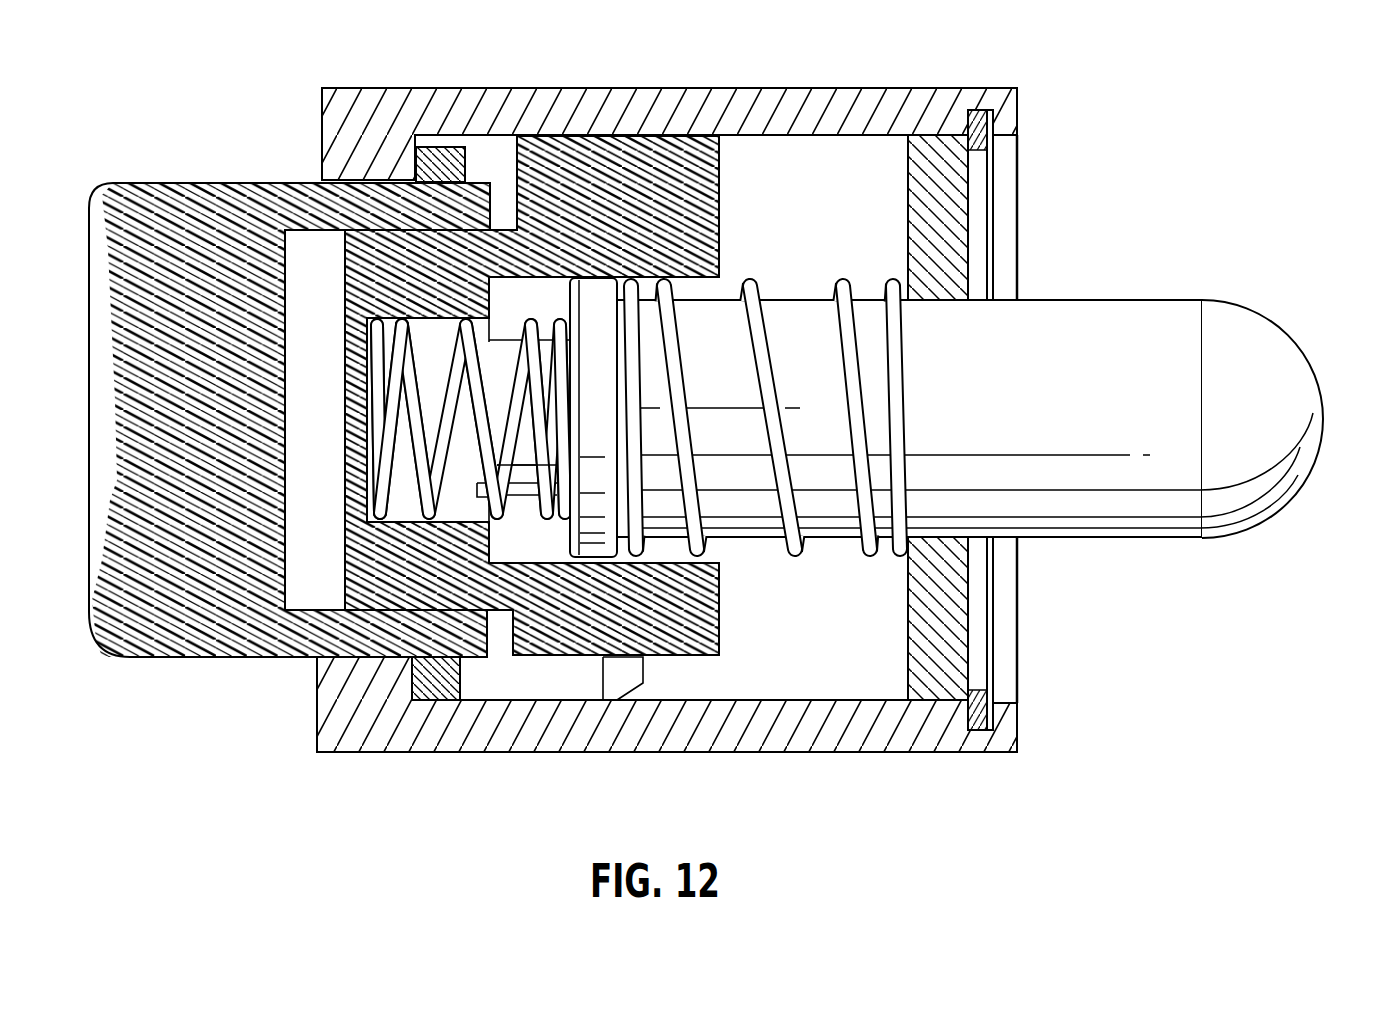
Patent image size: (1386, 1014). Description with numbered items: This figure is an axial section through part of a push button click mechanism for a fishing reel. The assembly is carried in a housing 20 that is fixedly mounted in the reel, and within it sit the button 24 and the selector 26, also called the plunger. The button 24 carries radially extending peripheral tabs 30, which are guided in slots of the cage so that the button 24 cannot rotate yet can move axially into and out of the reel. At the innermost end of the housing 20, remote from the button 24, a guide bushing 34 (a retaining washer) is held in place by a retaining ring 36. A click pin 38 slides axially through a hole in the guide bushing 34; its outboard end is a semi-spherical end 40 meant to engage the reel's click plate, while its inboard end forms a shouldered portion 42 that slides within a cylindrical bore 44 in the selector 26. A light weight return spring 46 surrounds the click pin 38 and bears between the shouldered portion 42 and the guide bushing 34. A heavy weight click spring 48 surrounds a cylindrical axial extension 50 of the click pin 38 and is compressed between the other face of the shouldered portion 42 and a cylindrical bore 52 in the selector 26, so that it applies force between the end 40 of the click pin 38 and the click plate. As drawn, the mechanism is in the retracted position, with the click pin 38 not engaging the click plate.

The housing 20 is at (507, 752).
The button 24 is at (113, 184).
The selector 26 is at (707, 175).
The peripheral tabs 30 is at (443, 162).
The guide bushing 34 is at (957, 140).
The retaining ring 36 is at (975, 200).
The click pin 38 is at (1295, 493).
The semi-spherical end 40 is at (1297, 357).
The shouldered portion 42 is at (592, 535).
The cylindrical bore 44 is at (548, 312).
The return spring 46 is at (745, 290).
The click spring 48 is at (402, 347).
The cylindrical axial extension 50 is at (513, 470).
The cylindrical bore 52 is at (450, 350).